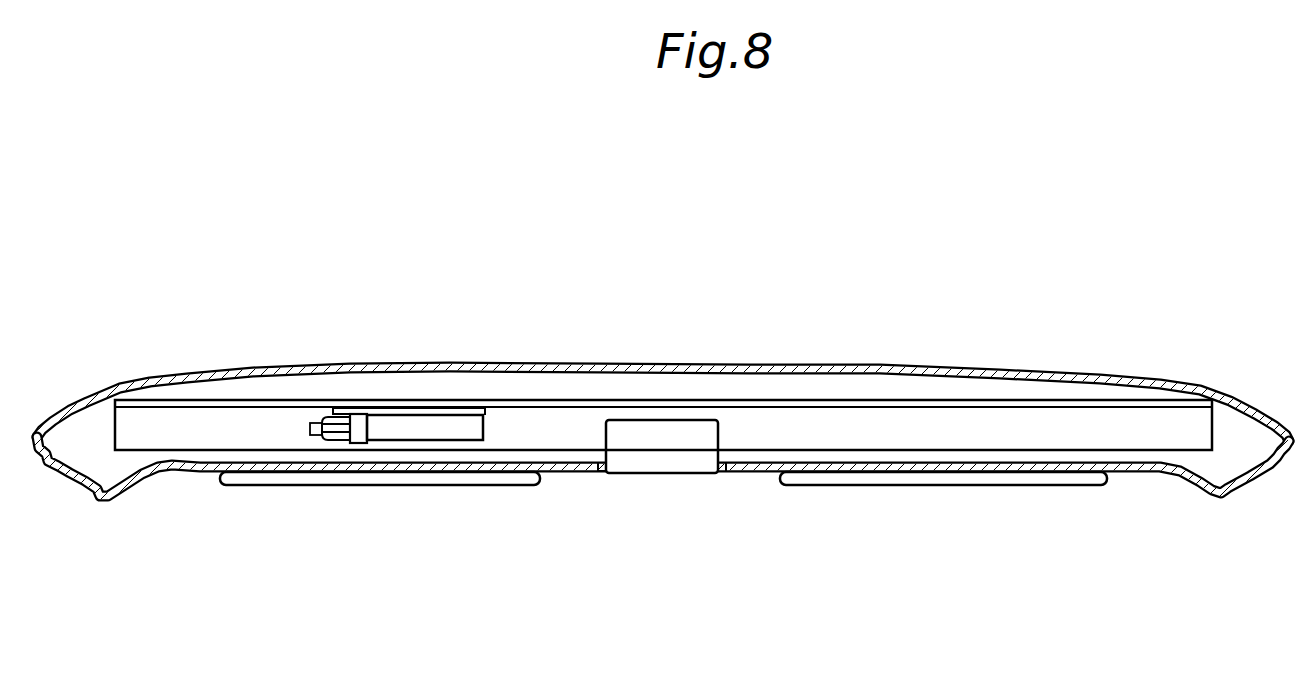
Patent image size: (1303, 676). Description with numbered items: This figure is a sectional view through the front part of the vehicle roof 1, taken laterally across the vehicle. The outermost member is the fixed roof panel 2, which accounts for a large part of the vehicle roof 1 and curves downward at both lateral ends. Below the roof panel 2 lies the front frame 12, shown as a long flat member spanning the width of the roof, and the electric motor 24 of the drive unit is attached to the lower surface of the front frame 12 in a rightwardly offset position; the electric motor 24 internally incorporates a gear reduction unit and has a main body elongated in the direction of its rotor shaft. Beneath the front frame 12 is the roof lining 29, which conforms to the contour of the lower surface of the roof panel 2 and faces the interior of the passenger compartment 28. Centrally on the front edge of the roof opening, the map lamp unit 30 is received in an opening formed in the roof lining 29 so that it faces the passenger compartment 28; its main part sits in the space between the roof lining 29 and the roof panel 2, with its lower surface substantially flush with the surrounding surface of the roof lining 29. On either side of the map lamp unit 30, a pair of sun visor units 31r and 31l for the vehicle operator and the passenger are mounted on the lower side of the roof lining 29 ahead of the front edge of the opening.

The vehicle roof 1 is at (1116, 246).
The roof panel 2 is at (929, 362).
The front frame 12 is at (528, 422).
The electric motor 24 is at (387, 403).
The passenger compartment 28 is at (682, 626).
The roof lining 29 is at (745, 465).
The map lamp unit 30 is at (632, 463).
The sun visor unit 31r is at (373, 487).
The sun visor unit 31l is at (950, 485).